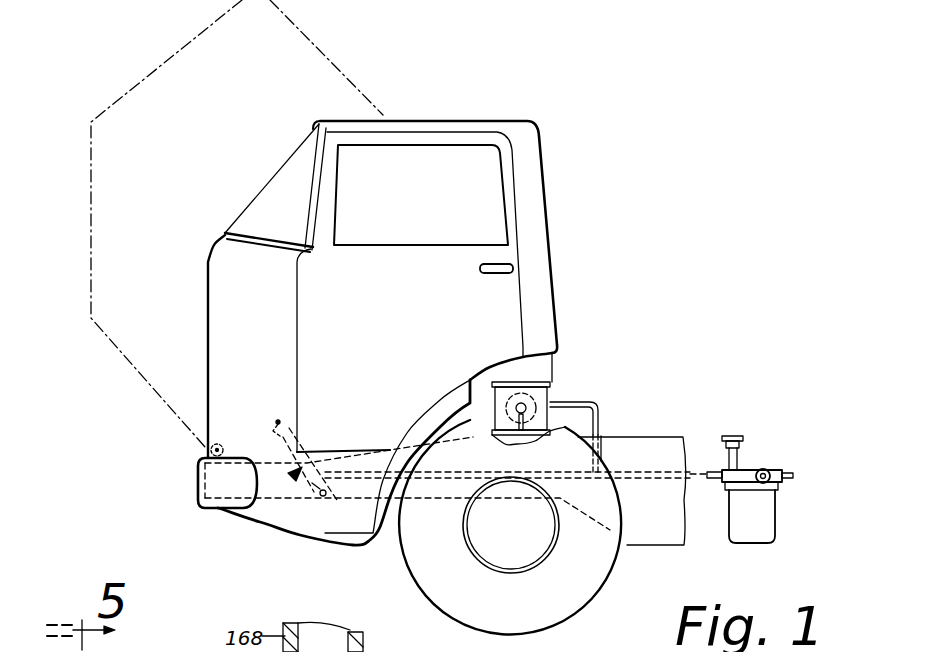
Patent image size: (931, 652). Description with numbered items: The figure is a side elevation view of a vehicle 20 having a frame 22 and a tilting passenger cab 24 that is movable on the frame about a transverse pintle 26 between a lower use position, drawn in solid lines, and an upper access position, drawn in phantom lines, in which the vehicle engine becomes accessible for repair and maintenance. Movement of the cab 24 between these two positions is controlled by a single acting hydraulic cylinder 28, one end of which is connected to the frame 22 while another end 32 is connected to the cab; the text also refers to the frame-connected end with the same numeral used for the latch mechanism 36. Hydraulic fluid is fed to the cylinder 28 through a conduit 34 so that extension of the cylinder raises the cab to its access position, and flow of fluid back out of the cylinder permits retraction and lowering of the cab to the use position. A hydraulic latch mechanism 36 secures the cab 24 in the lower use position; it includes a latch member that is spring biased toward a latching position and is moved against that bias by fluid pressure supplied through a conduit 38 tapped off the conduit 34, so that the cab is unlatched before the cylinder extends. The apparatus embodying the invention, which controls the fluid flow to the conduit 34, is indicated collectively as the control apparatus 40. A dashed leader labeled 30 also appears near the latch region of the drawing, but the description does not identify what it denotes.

The vehicle 20 is at (560, 155).
The frame 22 is at (651, 434).
The tilting passenger cab 24 is at (357, 85).
The transverse pintle 26 is at (208, 450).
The single acting hydraulic cylinder 28 is at (287, 480).
The latch mechanism 30 is at (322, 505).
The cylinder end 32 is at (279, 417).
The conduit 34 is at (440, 482).
The hydraulic latch mechanism 36 is at (556, 392).
The conduit 38 is at (601, 408).
The control apparatus 40 is at (783, 455).